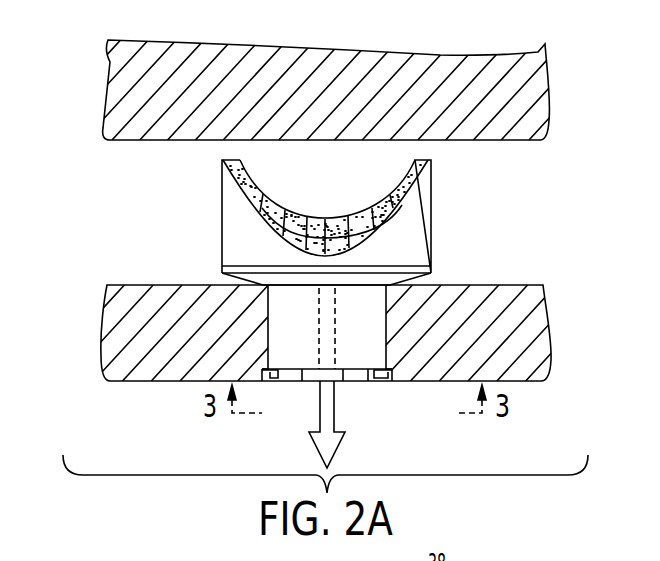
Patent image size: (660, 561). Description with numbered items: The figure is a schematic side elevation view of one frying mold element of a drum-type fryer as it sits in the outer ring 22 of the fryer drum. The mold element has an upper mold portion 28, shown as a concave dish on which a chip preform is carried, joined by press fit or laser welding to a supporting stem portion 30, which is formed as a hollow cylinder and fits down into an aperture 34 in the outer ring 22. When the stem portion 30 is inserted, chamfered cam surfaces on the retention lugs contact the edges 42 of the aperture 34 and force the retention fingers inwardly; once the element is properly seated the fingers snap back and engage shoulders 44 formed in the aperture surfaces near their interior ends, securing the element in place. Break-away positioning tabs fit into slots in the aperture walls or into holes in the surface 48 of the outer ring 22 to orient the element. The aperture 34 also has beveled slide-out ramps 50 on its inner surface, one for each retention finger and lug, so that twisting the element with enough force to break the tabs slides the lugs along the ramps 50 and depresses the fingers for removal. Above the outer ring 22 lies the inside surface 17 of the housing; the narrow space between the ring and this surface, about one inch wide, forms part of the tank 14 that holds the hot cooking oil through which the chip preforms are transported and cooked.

The tank 14 is at (108, 217).
The inside surface of the housing 17 is at (132, 142).
The outer ring 22 is at (505, 298).
The mold portion 28 is at (422, 213).
The stem portion 30 is at (370, 338).
The aperture 34 is at (387, 310).
The edges of the apertures 42 is at (267, 288).
The shoulders 44 is at (303, 381).
The surface of the outer ring 48 is at (228, 283).
The slide-out ramp 50 is at (358, 382).